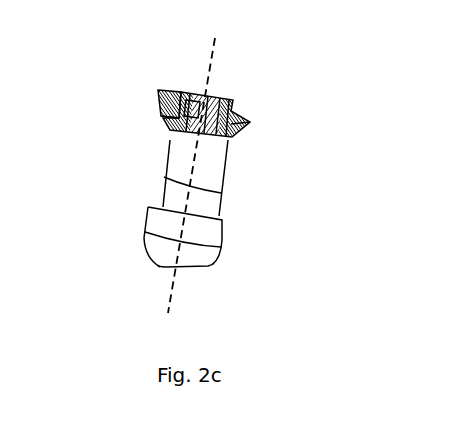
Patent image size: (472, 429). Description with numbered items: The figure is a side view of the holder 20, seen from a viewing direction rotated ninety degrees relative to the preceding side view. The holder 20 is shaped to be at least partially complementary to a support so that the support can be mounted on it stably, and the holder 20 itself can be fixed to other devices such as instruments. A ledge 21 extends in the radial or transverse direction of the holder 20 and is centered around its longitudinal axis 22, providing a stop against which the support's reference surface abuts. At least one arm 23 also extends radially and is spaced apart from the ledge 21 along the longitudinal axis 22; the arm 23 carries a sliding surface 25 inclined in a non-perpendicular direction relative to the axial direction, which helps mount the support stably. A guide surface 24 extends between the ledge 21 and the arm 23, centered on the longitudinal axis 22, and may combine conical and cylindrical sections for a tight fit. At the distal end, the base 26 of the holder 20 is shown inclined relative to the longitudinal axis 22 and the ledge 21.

The holder 20 is at (118, 150).
The ledge 21 is at (222, 218).
The longitudinal axis 22 is at (172, 300).
The arm 23 is at (192, 110).
The guide surface 24 is at (163, 192).
The sliding surface 25 is at (160, 115).
The base 26 is at (163, 267).